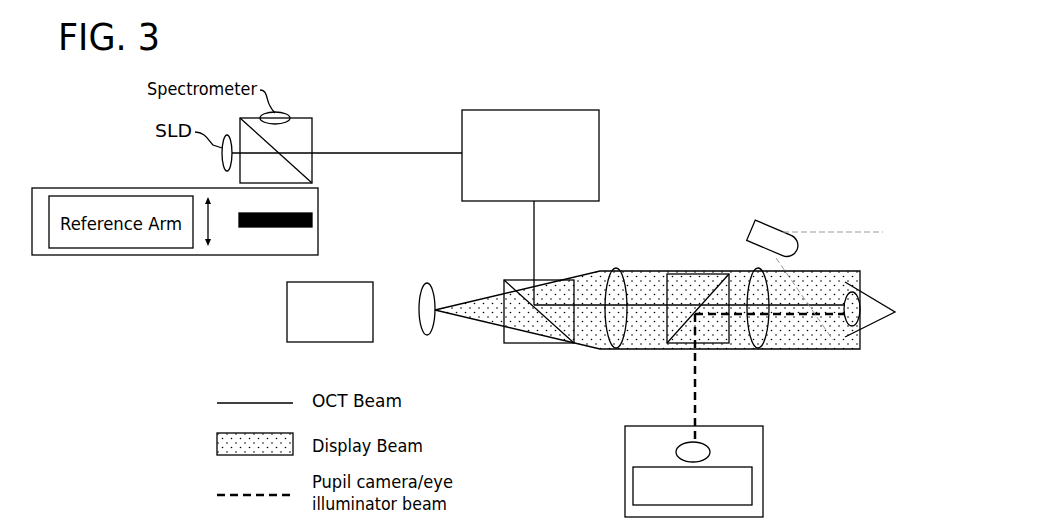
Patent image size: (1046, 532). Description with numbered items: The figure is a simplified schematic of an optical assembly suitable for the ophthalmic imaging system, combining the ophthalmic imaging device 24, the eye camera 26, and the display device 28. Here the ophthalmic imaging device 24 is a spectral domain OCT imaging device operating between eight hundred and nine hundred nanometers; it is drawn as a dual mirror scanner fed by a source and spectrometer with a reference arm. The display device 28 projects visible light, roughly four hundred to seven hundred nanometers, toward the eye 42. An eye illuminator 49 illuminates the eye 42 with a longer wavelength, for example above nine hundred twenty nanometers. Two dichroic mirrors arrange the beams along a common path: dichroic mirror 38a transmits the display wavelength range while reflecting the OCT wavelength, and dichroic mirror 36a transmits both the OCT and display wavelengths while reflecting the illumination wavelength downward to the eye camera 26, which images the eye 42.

The ophthalmic imaging device 24 is at (542, 55).
The eye camera 26 is at (625, 475).
The display device 28 is at (287, 312).
The dichroic mirror 36a is at (680, 343).
The dichroic mirror 38a is at (518, 343).
The eye 42 is at (872, 320).
The eye illuminator 49 is at (778, 222).